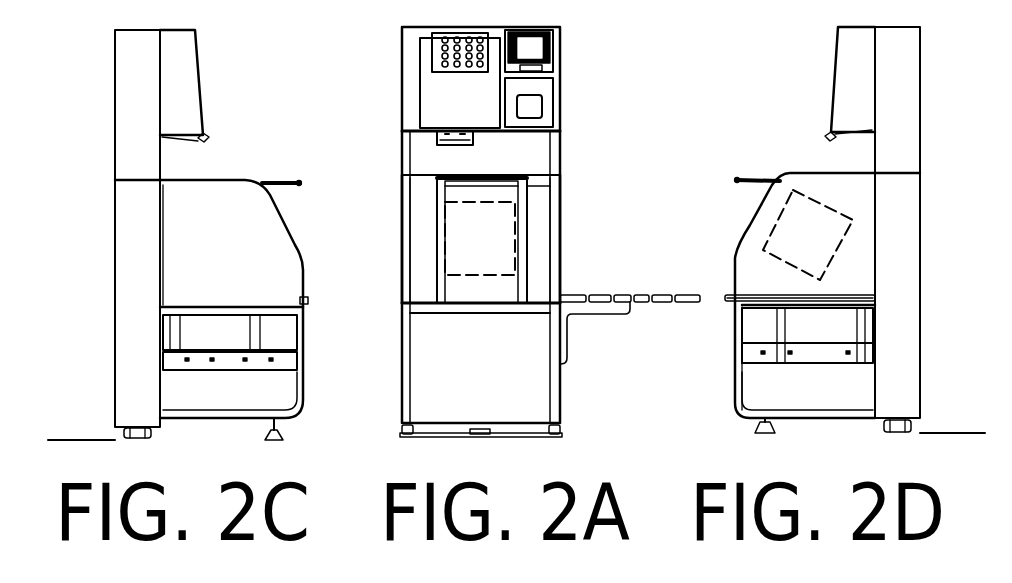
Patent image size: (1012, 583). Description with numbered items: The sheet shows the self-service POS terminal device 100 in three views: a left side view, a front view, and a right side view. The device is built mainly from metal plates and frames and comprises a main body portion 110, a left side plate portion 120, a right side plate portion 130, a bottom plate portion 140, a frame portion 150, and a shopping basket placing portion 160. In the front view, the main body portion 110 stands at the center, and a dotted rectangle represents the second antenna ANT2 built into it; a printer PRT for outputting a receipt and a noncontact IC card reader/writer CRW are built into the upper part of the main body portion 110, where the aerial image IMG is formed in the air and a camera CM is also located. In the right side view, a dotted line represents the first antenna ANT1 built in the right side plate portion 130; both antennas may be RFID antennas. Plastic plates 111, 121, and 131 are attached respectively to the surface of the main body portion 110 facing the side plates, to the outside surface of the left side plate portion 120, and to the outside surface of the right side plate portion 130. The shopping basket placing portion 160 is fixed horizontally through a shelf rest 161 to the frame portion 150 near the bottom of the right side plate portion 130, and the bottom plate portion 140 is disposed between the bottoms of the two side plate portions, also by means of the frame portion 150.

In FIG. 2A, the self-service POS terminal device 100 is at (667, 154).
In FIG. 2C, the main body portion 110 is at (120, 113).
In FIG. 2A, the main body portion 110 is at (557, 116).
In FIG. 2D, the main body portion 110 is at (905, 125).
In FIG. 2A, the plastic plate 111 is at (533, 278).
In FIG. 2C, the left side plate portion 120 is at (287, 226).
In FIG. 2A, the left side plate portion 120 is at (402, 200).
In FIG. 2C, the plastic plate 121 is at (173, 255).
In FIG. 2A, the right side plate portion 130 is at (560, 200).
In FIG. 2D, the right side plate portion 130 is at (780, 175).
In FIG. 2D, the plastic plate 131 is at (857, 270).
In FIG. 2A, the bottom plate portion 140 is at (480, 292).
In FIG. 2C, the frame portion 150 is at (293, 370).
In FIG. 2A, the frame portion 150 is at (550, 360).
In FIG. 2D, the frame portion 150 is at (733, 392).
In FIG. 2A, the shopping basket placing portion 160 is at (662, 294).
In FIG. 2A, the shelf rest 161 is at (573, 318).
In FIG. 2C, the aerial image IMG is at (245, 72).
In FIG. 2A, the aerial image IMG is at (436, 61).
In FIG. 2D, the aerial image IMG is at (836, 30).
In FIG. 2A, the camera CM is at (436, 129).
In FIG. 2D, the camera CM is at (826, 133).
In FIG. 2A, the printer PRT is at (530, 50).
In FIG. 2A, the noncontact IC card reader/writer CRW is at (532, 107).
In FIG. 2D, the first antenna ANT1 is at (855, 218).
In FIG. 2A, the second antenna ANT2 is at (517, 232).